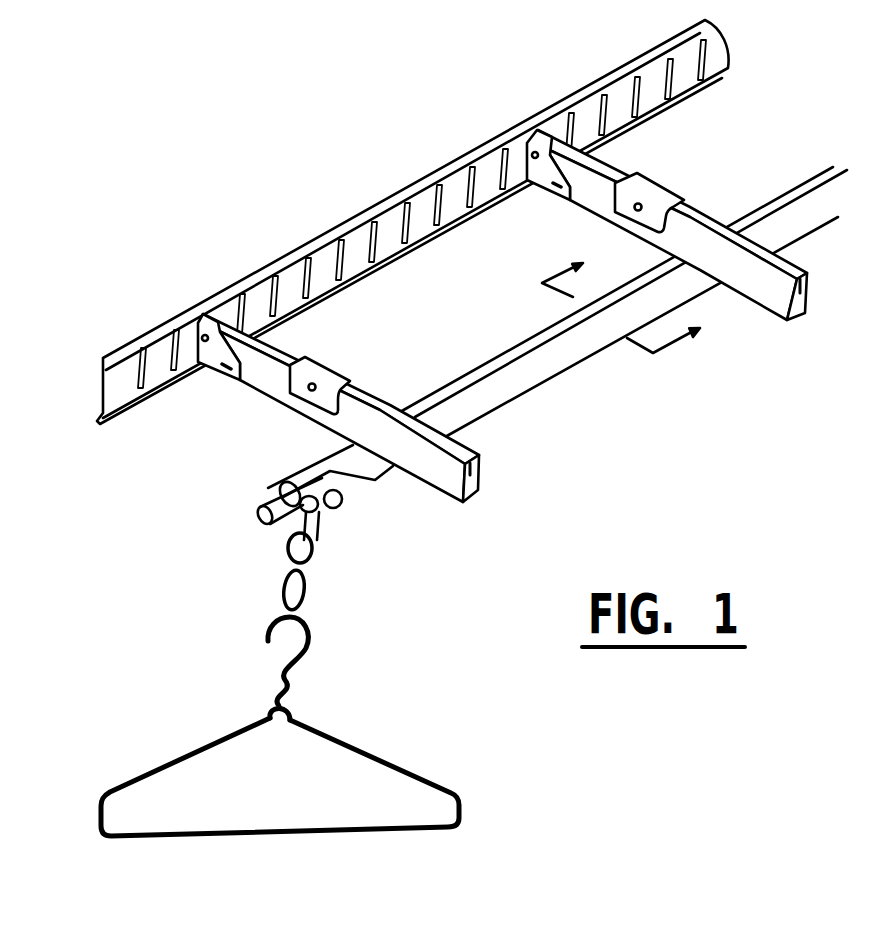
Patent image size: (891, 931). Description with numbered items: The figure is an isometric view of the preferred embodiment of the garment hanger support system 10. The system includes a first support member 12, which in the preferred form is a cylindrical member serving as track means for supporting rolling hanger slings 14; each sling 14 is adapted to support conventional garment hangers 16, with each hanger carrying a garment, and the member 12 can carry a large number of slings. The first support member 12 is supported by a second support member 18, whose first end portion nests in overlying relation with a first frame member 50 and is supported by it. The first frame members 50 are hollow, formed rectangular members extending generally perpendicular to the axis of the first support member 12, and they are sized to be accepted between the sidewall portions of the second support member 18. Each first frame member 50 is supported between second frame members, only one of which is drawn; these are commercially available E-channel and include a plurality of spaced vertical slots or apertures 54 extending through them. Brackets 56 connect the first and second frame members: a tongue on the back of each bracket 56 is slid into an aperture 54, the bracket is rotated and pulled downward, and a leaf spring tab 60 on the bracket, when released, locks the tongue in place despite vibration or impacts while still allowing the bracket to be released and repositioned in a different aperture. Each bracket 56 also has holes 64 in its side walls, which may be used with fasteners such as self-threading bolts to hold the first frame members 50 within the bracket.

The garment hanger support system 10 is at (472, 261).
The first support member 12 is at (267, 523).
The rolling hanger sling 14 is at (318, 545).
The garment hanger 16 is at (367, 750).
The second support member 18 is at (330, 368).
The first frame member 50 is at (465, 287).
The slot or aperture 54 is at (410, 233).
The bracket 56 is at (223, 368).
The leaf spring tab 60 is at (582, 347).
The hole 64 is at (202, 320).